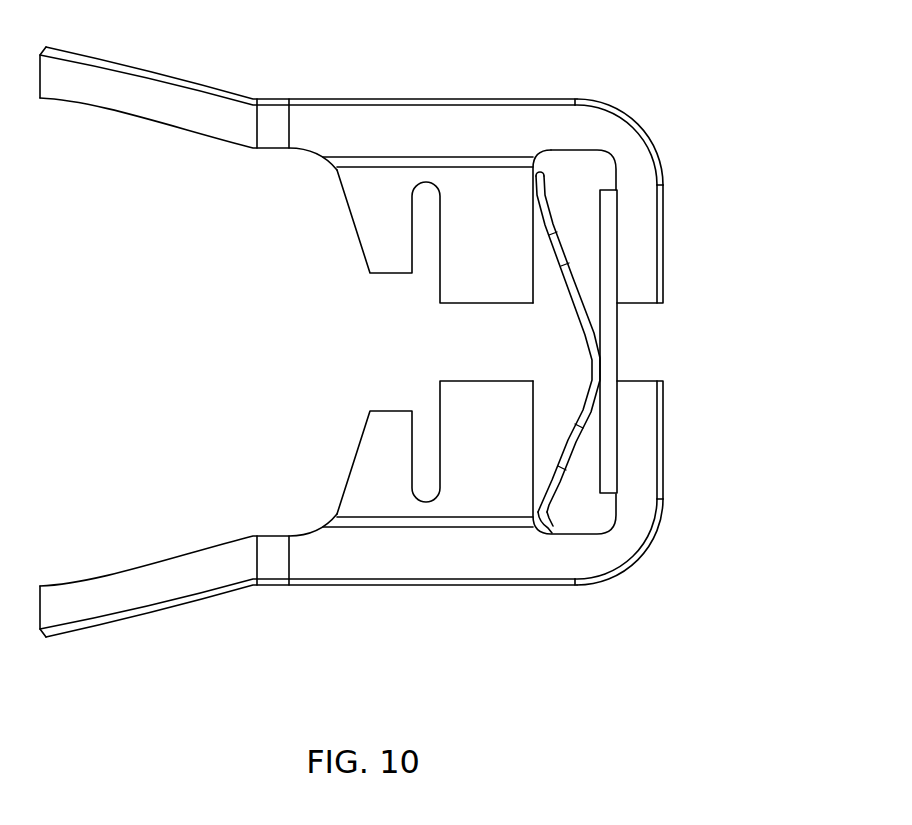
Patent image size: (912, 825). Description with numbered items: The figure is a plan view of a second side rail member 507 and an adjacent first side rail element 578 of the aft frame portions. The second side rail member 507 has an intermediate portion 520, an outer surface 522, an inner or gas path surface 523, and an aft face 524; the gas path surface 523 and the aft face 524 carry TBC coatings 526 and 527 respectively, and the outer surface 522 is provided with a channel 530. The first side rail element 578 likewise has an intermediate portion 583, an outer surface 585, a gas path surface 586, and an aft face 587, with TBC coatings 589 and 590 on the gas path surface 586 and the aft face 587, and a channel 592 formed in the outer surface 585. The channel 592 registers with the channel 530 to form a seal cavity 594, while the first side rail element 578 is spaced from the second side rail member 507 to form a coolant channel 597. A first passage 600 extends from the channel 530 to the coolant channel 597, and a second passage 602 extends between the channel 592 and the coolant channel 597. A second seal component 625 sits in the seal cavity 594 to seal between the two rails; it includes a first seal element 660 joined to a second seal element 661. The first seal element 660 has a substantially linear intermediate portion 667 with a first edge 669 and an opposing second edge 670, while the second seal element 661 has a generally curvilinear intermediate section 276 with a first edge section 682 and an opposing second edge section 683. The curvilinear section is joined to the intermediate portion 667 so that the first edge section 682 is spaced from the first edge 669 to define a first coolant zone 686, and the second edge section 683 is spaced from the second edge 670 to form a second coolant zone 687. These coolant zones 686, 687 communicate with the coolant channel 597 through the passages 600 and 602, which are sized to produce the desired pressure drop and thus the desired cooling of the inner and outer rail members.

The first side rail element 578 is at (268, 88).
The gas path surface 586 is at (323, 100).
The TBC coating 589 is at (383, 100).
The intermediate portion 583 is at (454, 122).
The channel 592 is at (584, 156).
The second edge 670 is at (612, 168).
The second coolant zone 687 is at (582, 238).
The second passage 602 is at (376, 167).
The second edge section 683 is at (542, 172).
The aft face 587 is at (663, 230).
The TBC coating 590 is at (665, 263).
The outer surface 585 is at (391, 277).
The seal cavity 594 is at (573, 318).
The contact member 276 is at (583, 320).
The second seal element 661 is at (568, 394).
The intermediate portion 667 is at (610, 320).
The second seal component 625 is at (637, 352).
The first seal element 660 is at (620, 363).
The coolant channel 597 is at (112, 400).
The outer surface 522 is at (392, 409).
The aft face 524 is at (662, 427).
The first passage 600 is at (362, 518).
The TBC coating 527 is at (662, 460).
The first coolant zone 686 is at (580, 465).
The first edge 669 is at (642, 549).
The first edge section 682 is at (551, 533).
The channel 530 is at (600, 531).
The TBC coating 526 is at (495, 588).
The gas path surface 523 is at (373, 578).
The intermediate portion 520 is at (322, 556).
The second side rail member 507 is at (272, 608).